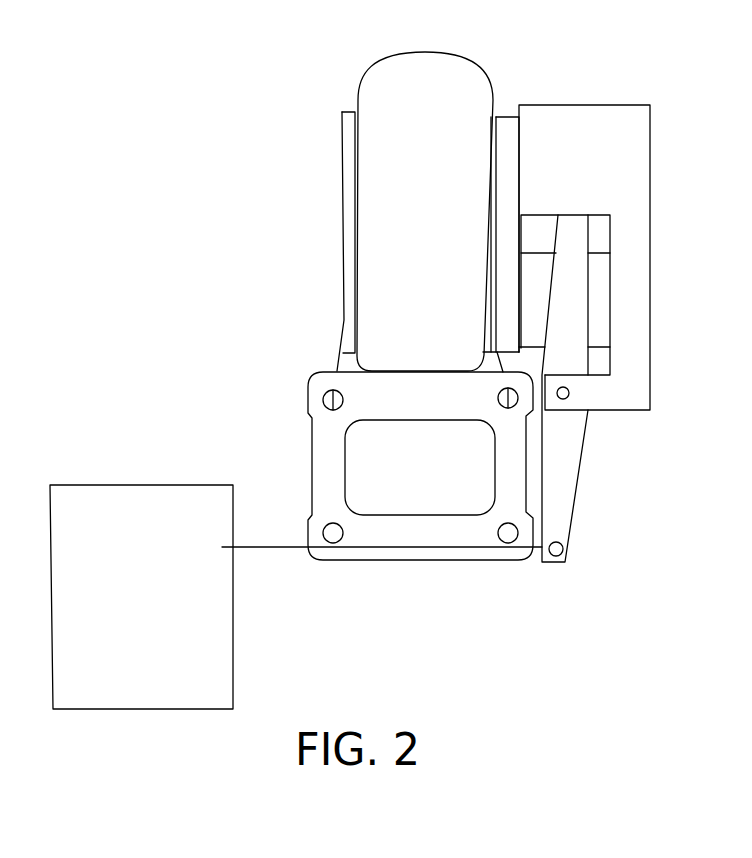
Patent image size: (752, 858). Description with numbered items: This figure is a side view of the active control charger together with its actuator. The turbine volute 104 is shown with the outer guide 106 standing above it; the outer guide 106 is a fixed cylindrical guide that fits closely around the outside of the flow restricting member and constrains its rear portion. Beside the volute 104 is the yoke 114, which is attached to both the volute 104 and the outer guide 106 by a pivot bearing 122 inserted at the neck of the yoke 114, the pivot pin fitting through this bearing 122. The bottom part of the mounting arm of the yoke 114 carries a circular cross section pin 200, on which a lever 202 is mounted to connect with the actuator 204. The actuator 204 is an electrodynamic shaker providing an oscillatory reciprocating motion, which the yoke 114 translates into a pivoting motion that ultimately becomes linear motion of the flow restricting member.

The turbine volute 104 is at (575, 112).
The outer guide 106 is at (429, 52).
The yoke 114 is at (576, 468).
The pivot bearing 122 is at (569, 393).
The pin 200 is at (563, 553).
The lever 202 is at (285, 548).
The actuator 204 is at (159, 608).